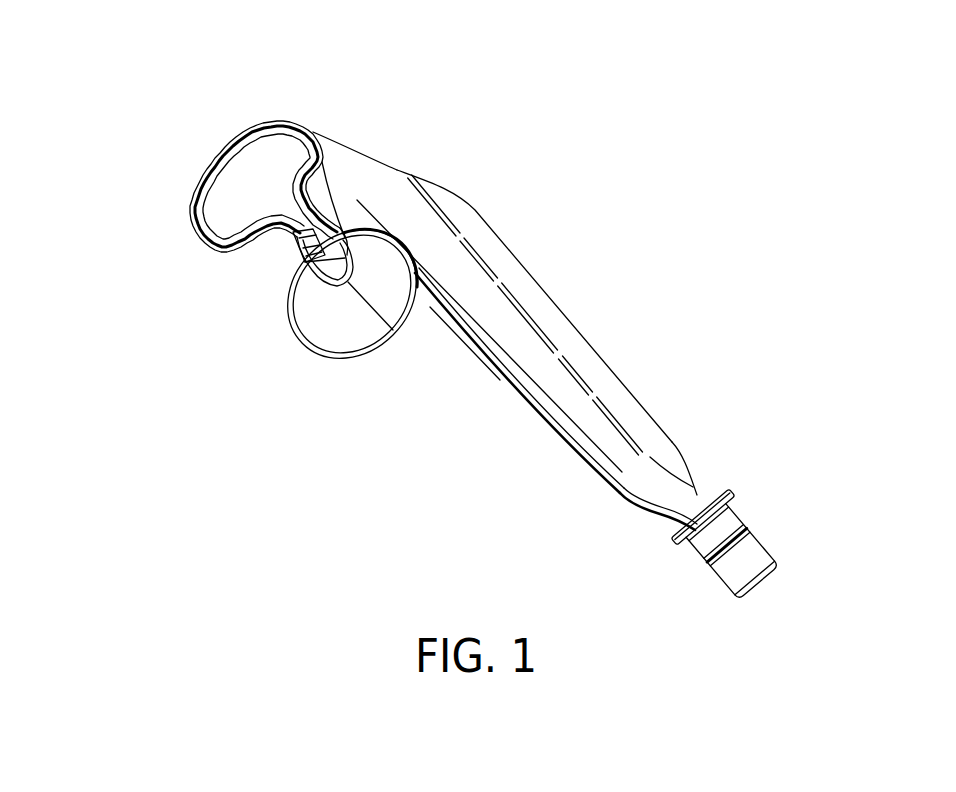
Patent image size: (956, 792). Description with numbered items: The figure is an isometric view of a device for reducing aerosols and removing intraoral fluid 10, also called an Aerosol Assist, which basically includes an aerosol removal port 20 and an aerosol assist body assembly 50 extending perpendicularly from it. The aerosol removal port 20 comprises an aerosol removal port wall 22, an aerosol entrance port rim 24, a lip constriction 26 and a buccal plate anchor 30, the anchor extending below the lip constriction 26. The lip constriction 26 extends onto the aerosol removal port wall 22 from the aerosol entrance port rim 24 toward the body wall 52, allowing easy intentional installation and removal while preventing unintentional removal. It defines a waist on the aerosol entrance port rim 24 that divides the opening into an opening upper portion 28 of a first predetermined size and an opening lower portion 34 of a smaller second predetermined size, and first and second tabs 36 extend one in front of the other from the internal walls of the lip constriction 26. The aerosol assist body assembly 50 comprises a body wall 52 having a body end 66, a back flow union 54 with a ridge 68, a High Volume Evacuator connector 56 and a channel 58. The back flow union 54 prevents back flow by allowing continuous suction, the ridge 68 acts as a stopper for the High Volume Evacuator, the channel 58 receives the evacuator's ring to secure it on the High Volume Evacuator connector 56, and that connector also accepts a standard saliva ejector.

The device for reducing aerosols and removing intraoral fluid 10 is at (502, 95).
The aerosol removal port 20 is at (190, 103).
The aerosol removal port wall 22 is at (338, 151).
The aerosol entrance port rim 24 is at (213, 162).
The lip constriction 26 is at (293, 243).
The opening upper portion 28 is at (242, 233).
The buccal plate anchor 30 is at (366, 357).
The opening lower portion 34 is at (343, 233).
The first and second tabs 36 is at (300, 276).
The aerosol assist body assembly 50 is at (575, 209).
The body wall 52 is at (470, 227).
The back flow union 54 is at (700, 467).
The High Volume Evacuator connector 56 is at (762, 553).
The channel 58 is at (713, 560).
The body end 66 is at (674, 437).
The ridge 68 is at (730, 493).